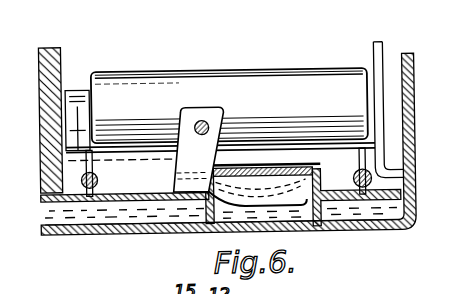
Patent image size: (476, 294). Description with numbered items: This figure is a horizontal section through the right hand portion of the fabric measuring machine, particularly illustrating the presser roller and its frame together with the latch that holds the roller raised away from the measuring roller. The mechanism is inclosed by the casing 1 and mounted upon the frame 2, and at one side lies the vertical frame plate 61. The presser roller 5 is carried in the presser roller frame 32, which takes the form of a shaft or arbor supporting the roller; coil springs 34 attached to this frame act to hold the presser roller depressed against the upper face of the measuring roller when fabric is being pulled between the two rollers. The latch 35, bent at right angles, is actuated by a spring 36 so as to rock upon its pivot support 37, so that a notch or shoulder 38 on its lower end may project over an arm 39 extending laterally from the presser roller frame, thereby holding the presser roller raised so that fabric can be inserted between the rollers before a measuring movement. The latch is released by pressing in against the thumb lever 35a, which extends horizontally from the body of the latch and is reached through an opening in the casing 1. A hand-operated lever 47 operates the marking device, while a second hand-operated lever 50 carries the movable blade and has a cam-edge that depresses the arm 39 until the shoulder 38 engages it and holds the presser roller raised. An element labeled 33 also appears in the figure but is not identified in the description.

The casing 1 is at (414, 102).
The frame 2 is at (388, 200).
The presser roller 5 is at (318, 84).
The presser roller frame 32 is at (186, 70).
The support bracket 33 is at (70, 128).
The coil springs 34 is at (84, 190).
The latch 35 is at (194, 107).
The thumb lever 35a is at (274, 207).
The spring 36 is at (233, 127).
The pivot support 37 is at (205, 122).
The notch or shoulder 38 is at (157, 184).
The arm 39 is at (162, 232).
The hand-operated lever 47 is at (358, 218).
The second hand-operated lever 50 is at (42, 210).
The vertical frame plate 61 is at (55, 47).